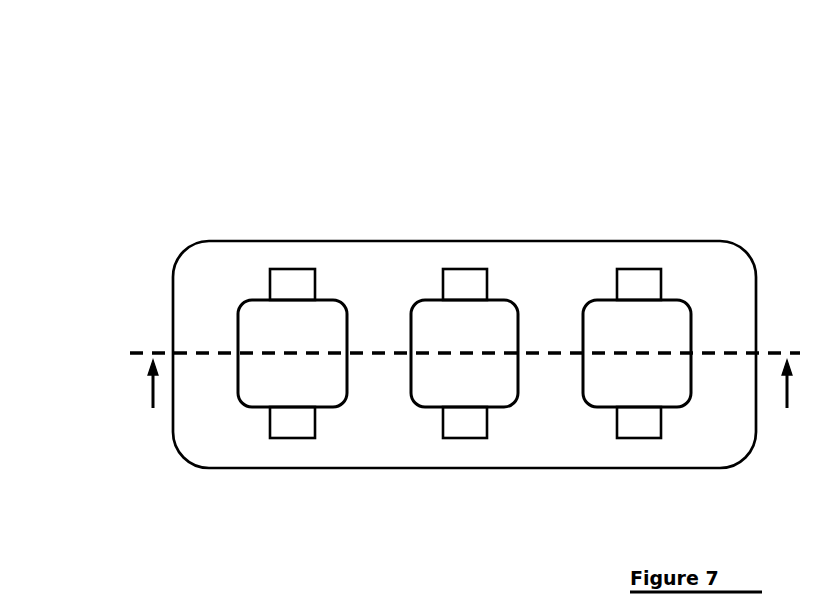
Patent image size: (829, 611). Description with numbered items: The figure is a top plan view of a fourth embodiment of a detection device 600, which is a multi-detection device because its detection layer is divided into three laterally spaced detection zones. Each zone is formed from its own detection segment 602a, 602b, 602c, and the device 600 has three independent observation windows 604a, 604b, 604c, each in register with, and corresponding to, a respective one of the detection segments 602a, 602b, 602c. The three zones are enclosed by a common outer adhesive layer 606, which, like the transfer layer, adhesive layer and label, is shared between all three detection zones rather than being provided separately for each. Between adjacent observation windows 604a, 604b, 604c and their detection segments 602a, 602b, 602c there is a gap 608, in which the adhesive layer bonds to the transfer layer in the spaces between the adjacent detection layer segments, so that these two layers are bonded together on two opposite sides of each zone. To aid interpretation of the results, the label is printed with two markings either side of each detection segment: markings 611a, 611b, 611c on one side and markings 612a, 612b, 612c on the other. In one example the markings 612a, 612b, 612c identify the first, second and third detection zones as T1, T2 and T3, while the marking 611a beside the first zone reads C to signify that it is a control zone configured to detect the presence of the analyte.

The detection device 600 is at (146, 98).
The detection segment 602a is at (240, 354).
The detection segment 602b is at (487, 353).
The detection segment 602c is at (683, 358).
The observation window 604a is at (251, 314).
The observation window 604b is at (484, 307).
The observation window 604c is at (670, 309).
The outer adhesive layer 606 is at (190, 306).
The gap 608 is at (553, 318).
The marking 611a is at (280, 283).
The marking 611b is at (461, 287).
The marking 611c is at (632, 283).
The marking 612a is at (283, 422).
The marking 612b is at (462, 425).
The marking 612c is at (635, 422).